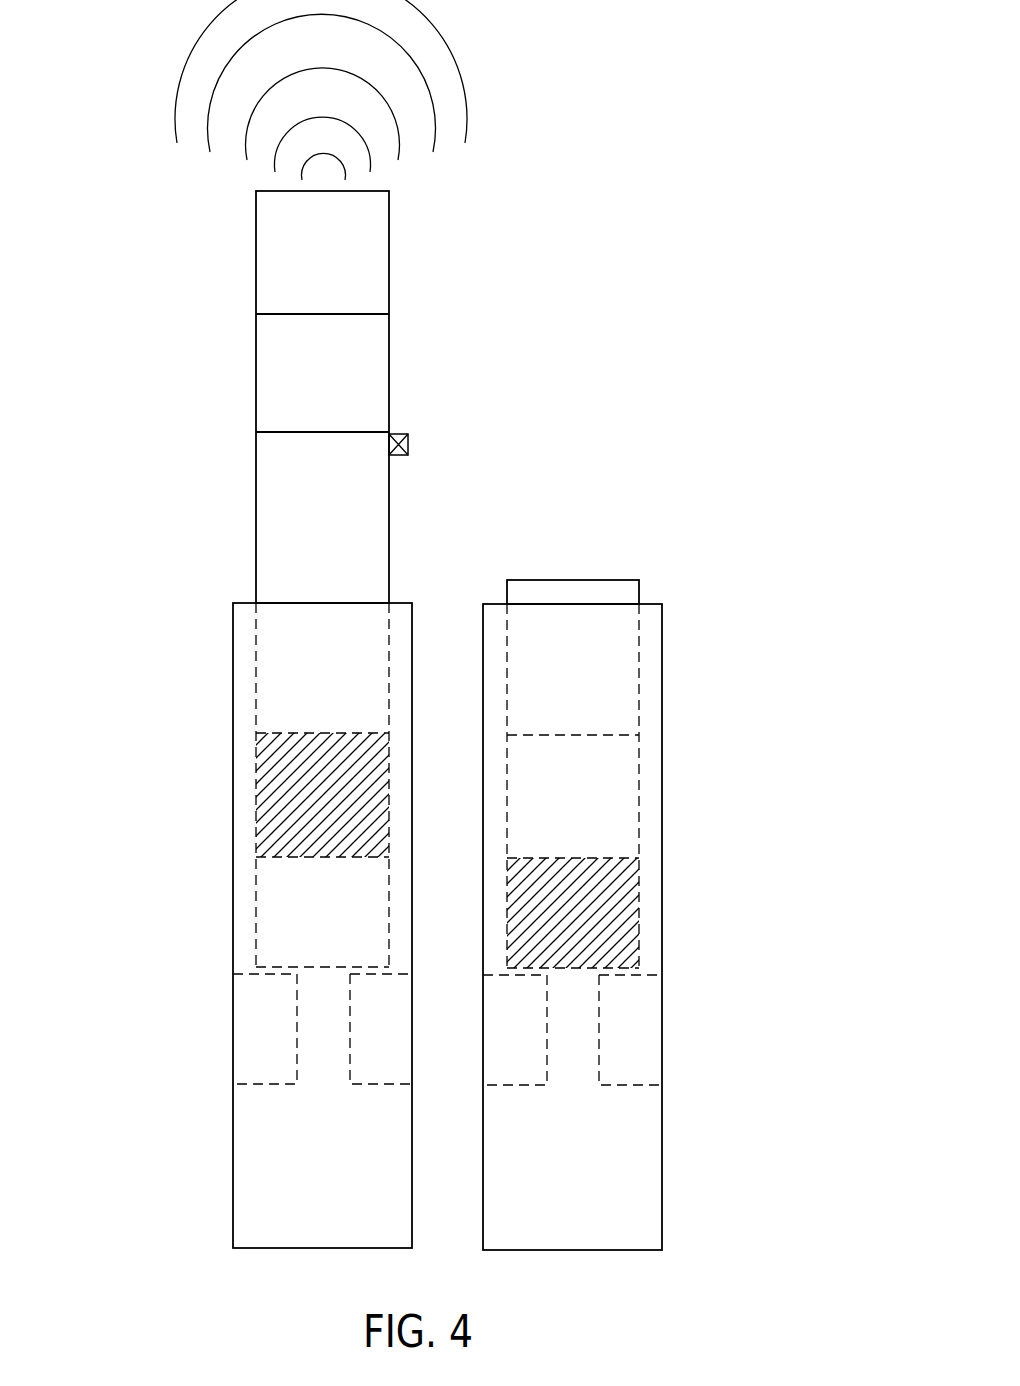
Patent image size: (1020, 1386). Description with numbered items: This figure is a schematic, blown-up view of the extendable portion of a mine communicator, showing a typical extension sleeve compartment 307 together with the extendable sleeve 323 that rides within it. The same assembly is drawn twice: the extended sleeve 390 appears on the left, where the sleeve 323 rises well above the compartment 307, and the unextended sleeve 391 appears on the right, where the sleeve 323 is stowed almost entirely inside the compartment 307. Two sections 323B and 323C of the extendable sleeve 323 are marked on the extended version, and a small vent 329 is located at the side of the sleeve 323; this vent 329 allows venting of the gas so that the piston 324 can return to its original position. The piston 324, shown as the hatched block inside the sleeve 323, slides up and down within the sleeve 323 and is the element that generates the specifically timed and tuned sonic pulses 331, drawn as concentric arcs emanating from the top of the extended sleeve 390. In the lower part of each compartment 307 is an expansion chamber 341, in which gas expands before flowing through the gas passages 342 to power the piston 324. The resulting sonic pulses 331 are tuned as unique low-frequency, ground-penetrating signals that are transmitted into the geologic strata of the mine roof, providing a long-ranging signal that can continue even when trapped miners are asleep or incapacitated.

The sonic pulse 331 is at (440, 82).
The extended sleeve 390 is at (210, 343).
The unextended sleeve 391 is at (681, 540).
The extendable sleeve 323 is at (258, 516).
The sleeve section 323B is at (337, 312).
The sleeve section 323C is at (337, 432).
The vent 329 is at (408, 445).
The extension sleeve compartment 307 is at (233, 645).
The piston 324 is at (268, 803).
The gas passage 342 is at (313, 1032).
The expansion chamber 341 is at (240, 1178).